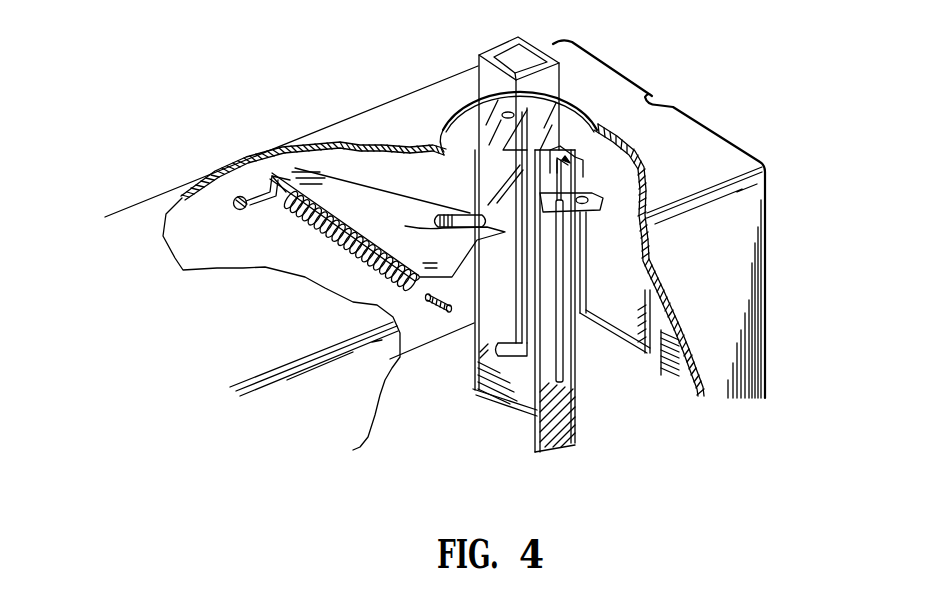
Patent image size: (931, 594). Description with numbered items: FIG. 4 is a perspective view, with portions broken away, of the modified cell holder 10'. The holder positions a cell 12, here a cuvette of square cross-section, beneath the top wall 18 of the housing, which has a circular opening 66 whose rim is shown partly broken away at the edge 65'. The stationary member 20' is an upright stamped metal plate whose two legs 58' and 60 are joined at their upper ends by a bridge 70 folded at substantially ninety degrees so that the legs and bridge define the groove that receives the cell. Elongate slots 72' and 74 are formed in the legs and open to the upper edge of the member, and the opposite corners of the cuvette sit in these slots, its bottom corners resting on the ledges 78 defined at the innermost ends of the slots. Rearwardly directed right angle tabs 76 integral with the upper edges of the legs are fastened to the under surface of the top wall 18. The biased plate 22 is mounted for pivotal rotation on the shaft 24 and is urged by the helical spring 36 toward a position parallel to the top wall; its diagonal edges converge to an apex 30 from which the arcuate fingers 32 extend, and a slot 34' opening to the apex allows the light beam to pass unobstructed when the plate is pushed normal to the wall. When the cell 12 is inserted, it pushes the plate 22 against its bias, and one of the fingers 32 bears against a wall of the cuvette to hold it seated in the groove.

The cell holder 10' is at (318, 47).
The cell 12 is at (522, 38).
The top wall 18 is at (348, 134).
The stationary member 20' is at (581, 304).
The plate member 22 is at (333, 225).
The shaft 24 is at (432, 302).
The apex 30 is at (480, 227).
The fingers 32 is at (505, 232).
The slot 34' is at (431, 223).
The helical spring 36 is at (302, 215).
The leg 58' is at (478, 292).
The leg 60 is at (538, 418).
The torn wall edge 65' is at (649, 257).
The circular opening 66 is at (458, 112).
The bridge 70 is at (580, 230).
The elongate slot 72' is at (585, 271).
The elongate slot 74 is at (563, 152).
The right angle tabs 76 is at (605, 201).
The ledges 78 is at (503, 350).